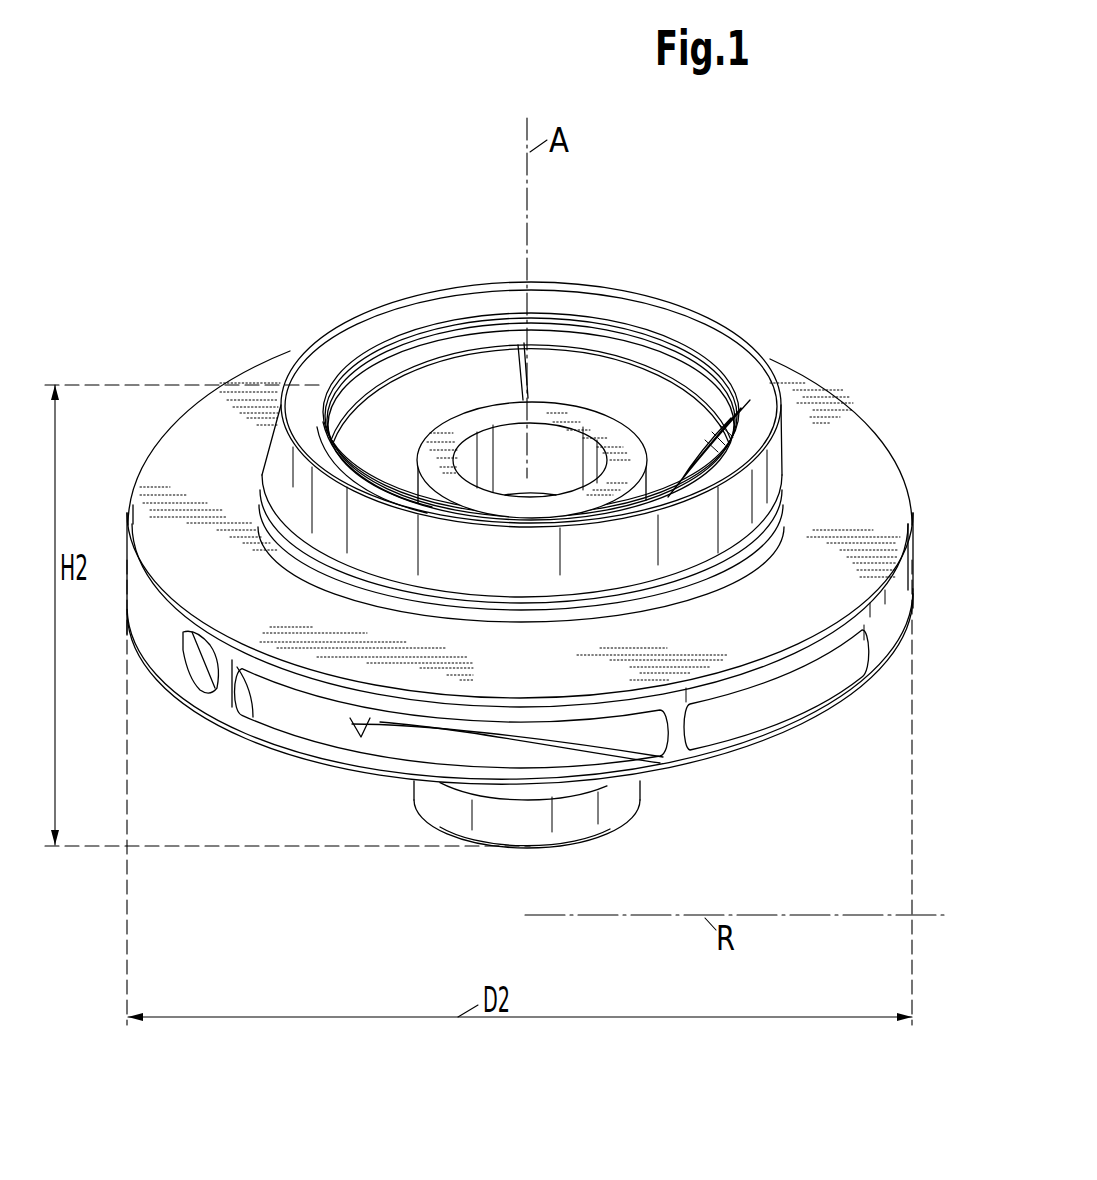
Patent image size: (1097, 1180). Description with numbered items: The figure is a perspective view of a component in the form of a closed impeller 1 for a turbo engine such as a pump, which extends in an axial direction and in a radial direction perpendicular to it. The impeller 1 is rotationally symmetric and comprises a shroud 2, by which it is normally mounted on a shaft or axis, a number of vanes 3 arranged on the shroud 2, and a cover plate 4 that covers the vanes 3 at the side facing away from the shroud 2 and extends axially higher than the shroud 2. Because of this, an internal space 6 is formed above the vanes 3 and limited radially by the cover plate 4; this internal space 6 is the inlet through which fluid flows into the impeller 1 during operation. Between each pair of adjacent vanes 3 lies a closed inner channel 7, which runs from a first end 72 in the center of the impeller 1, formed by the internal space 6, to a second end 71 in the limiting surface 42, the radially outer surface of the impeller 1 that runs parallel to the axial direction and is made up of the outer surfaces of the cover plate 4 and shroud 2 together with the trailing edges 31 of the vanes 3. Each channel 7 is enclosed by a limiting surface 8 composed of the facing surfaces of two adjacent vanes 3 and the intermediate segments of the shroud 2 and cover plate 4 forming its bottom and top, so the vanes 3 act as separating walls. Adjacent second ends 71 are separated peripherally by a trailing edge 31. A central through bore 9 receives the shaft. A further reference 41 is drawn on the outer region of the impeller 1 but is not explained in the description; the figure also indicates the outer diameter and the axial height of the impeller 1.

The impeller 1 is at (746, 205).
The shroud 2 is at (500, 406).
The vanes 3 is at (410, 340).
The cover plate 4 is at (245, 435).
The internal space 6 is at (400, 413).
The inner channel 7 is at (752, 418).
The limiting surface 8 is at (361, 737).
The central through bore 9 is at (556, 440).
The trailing edges 31 is at (238, 718).
The outer surface of ring 41 is at (742, 508).
The limiting surface 42 is at (207, 703).
The second end 71 is at (325, 722).
The first end 72 is at (550, 335).